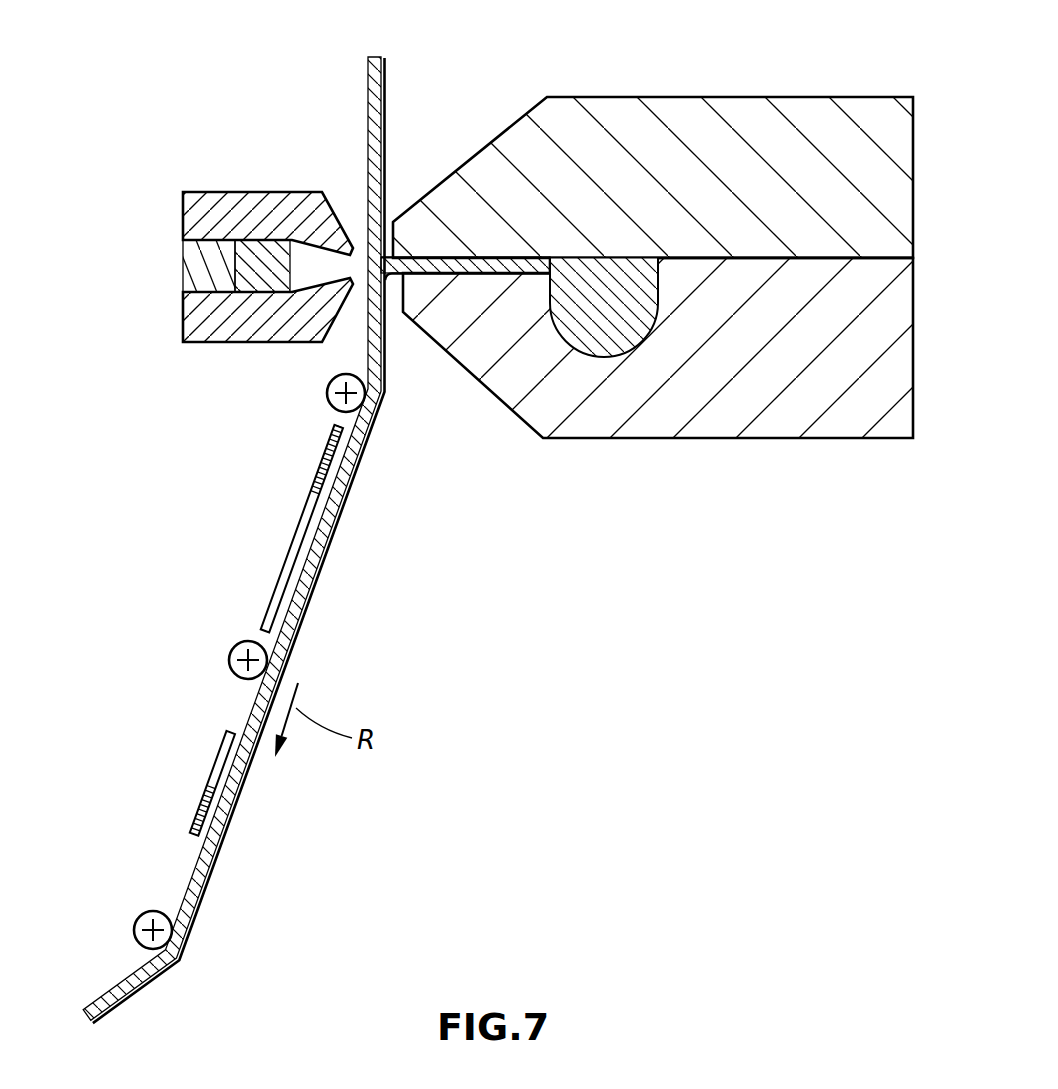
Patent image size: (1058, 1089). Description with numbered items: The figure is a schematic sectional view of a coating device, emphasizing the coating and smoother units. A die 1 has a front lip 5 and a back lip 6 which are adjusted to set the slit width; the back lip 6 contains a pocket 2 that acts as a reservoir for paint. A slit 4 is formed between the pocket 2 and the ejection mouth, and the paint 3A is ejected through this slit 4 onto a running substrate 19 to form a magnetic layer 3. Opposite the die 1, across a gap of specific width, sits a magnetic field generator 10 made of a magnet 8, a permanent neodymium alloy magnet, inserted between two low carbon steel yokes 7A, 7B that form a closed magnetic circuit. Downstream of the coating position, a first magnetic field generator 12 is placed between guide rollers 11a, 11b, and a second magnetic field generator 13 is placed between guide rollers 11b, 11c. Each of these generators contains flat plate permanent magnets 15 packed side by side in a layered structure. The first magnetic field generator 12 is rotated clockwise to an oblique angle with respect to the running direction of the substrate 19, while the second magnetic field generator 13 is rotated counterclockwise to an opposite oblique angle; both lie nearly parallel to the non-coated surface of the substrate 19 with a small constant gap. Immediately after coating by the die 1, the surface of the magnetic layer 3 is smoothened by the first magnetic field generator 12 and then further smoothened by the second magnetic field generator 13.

The die 1 is at (810, 92).
The pocket 2 is at (607, 358).
The magnetic layer 3 is at (293, 657).
The paint 3A is at (633, 328).
The slit 4 is at (390, 278).
The front lip 5 is at (406, 252).
The back lip 6 is at (424, 298).
The yoke 7A is at (320, 191).
The yoke 7B is at (305, 327).
The magnet 8 is at (242, 272).
The magnetic field generator 10 is at (237, 262).
The guide roller 11a is at (327, 393).
The guide roller 11b is at (229, 659).
The guide roller 11c is at (148, 909).
The first magnetic field generator 12 is at (283, 549).
The second magnetic field generator 13 is at (206, 760).
The permanent magnets 15 is at (317, 487).
The substrate 19 is at (368, 73).